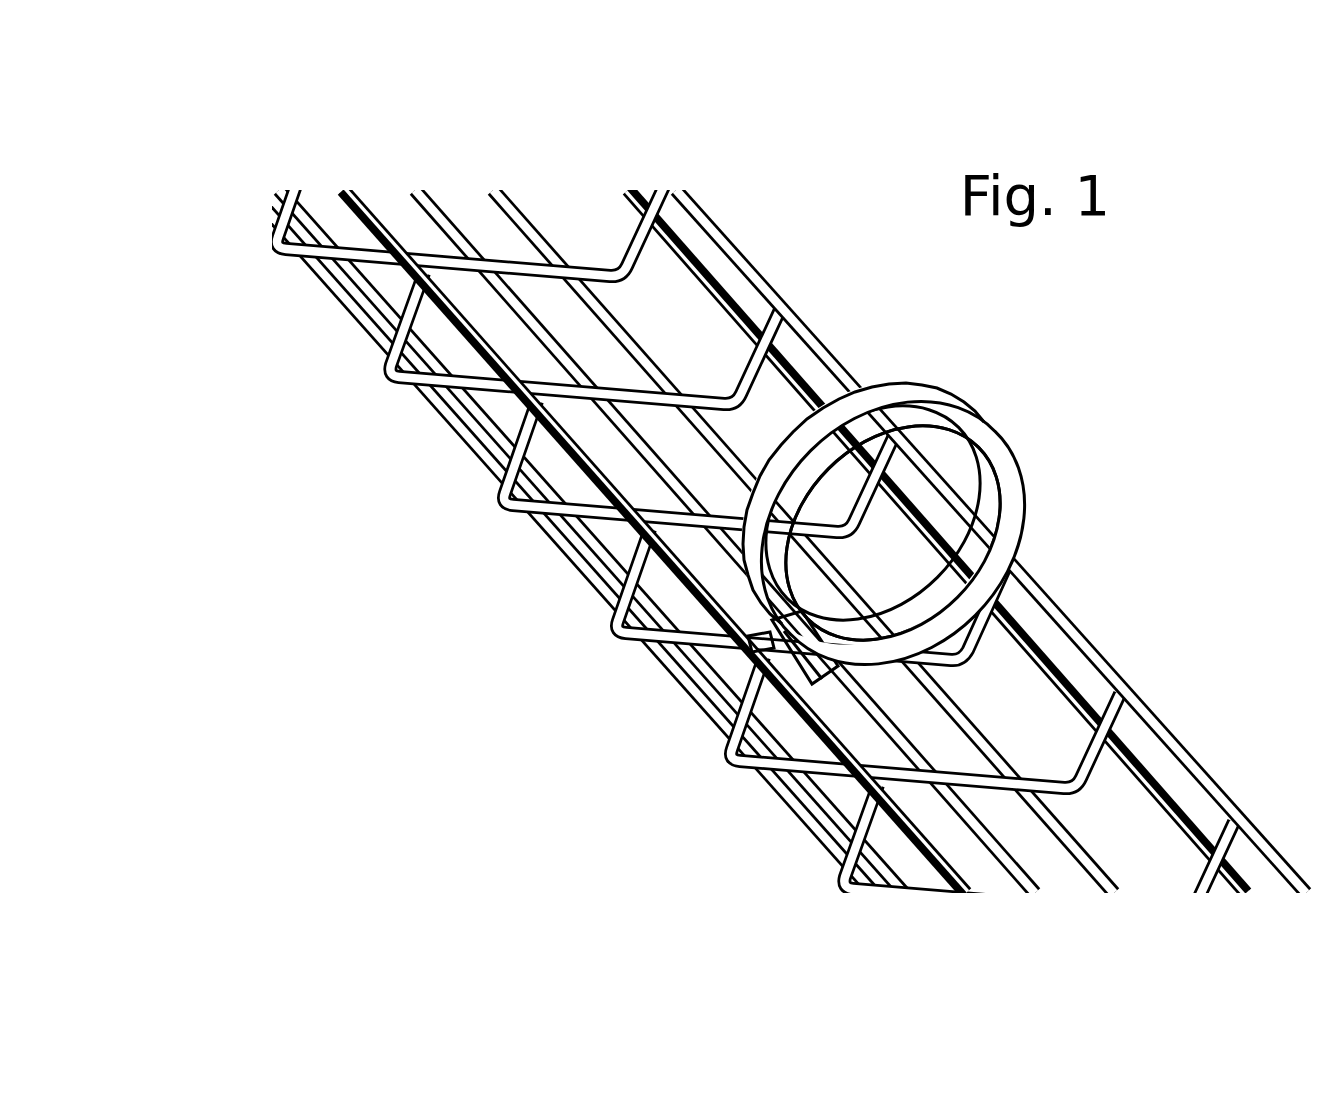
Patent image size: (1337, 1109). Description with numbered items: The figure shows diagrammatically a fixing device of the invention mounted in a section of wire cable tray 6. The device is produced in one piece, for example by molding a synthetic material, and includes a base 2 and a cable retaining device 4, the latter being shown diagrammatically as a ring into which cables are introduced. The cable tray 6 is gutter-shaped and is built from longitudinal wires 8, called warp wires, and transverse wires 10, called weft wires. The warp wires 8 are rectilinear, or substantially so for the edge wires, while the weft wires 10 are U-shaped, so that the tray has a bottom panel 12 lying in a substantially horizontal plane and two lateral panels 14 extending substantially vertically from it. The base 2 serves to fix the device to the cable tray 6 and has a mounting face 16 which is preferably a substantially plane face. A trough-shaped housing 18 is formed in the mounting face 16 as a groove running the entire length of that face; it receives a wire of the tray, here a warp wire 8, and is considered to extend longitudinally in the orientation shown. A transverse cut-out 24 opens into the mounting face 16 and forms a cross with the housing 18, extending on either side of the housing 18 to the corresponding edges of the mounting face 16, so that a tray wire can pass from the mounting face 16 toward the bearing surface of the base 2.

The base 2 is at (856, 640).
The cable retaining device 4 is at (1000, 468).
The section of wire cable tray 6 is at (777, 231).
The longitudinal wire 8 is at (1034, 904).
The transverse wire 10 is at (505, 504).
The bottom panel 12 is at (777, 537).
The lateral panel 14 is at (762, 313).
The mounting face 16 is at (816, 696).
The trough-shaped housing 18 is at (858, 664).
The transverse cut-out 24 is at (755, 647).